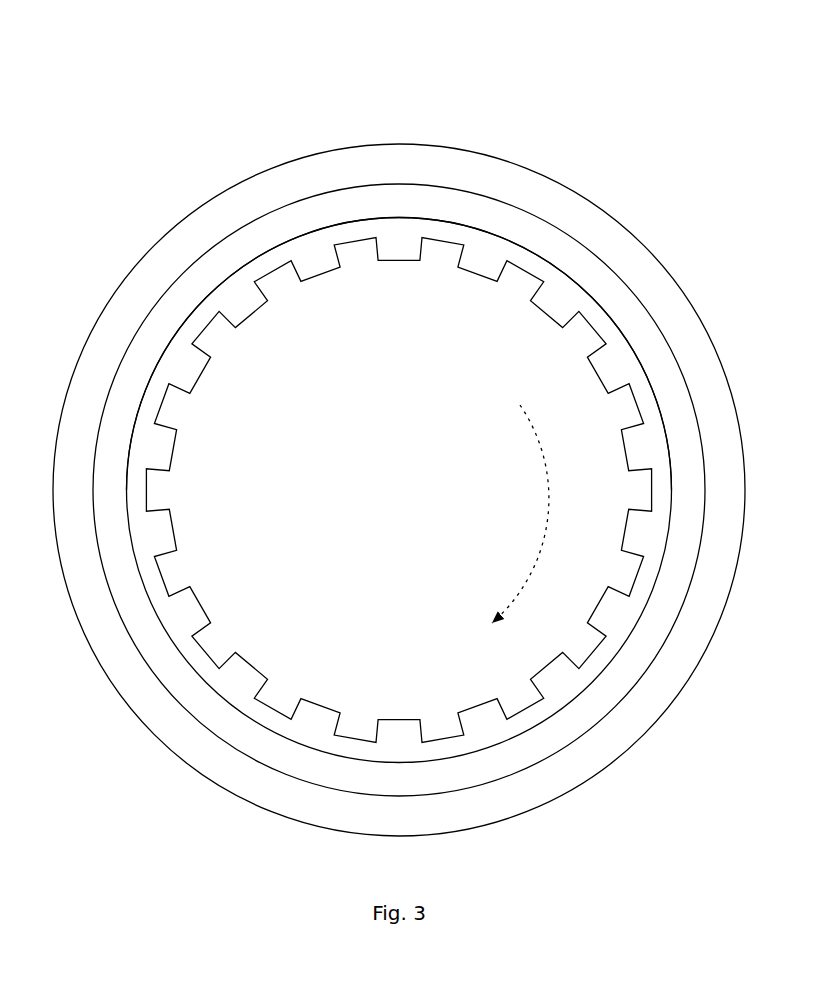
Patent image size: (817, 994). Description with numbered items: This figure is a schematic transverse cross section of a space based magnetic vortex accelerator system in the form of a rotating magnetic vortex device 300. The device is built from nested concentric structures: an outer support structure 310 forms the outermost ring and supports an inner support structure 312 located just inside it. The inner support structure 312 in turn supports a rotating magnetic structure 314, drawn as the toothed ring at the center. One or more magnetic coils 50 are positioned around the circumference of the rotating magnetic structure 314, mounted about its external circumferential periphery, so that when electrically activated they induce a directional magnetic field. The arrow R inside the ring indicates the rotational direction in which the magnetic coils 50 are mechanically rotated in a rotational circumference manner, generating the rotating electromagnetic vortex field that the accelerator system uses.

The rotating magnetic vortex device 300 is at (263, 132).
The outer support structure 310 is at (623, 252).
The inner support structure 312 is at (450, 203).
The rotating magnetic structure 314 is at (172, 352).
The magnetic coil 50 is at (247, 305).
The rotational direction R is at (548, 520).